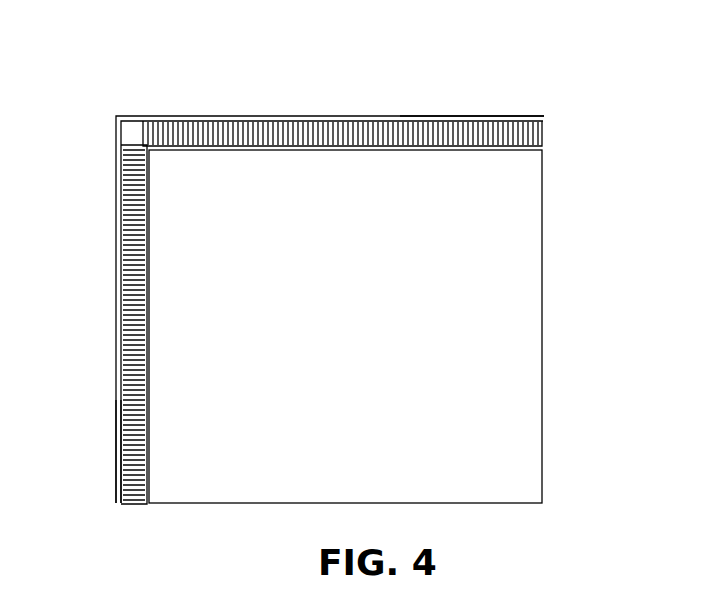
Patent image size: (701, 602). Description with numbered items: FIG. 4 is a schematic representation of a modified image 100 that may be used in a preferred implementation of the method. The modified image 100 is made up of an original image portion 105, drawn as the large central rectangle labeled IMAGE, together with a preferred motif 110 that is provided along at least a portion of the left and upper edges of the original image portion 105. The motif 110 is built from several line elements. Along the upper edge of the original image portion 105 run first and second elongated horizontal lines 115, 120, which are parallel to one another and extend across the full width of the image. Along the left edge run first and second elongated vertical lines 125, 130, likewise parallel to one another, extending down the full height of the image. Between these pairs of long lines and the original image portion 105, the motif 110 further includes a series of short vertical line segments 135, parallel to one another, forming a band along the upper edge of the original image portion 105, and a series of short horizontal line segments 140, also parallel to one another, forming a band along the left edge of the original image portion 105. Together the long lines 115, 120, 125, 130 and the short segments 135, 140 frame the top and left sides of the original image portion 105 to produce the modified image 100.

The modified image 100 is at (320, 89).
The original image portion 105 is at (542, 340).
The motif 110 is at (116, 116).
The first elongated horizontal line 115 is at (544, 116).
The second elongated horizontal line 120 is at (543, 122).
The first elongated vertical line 125 is at (116, 503).
The second elongated vertical line 130 is at (121, 503).
The series of short vertical line segments 135 is at (543, 135).
The series of short horizontal line segments 140 is at (128, 505).